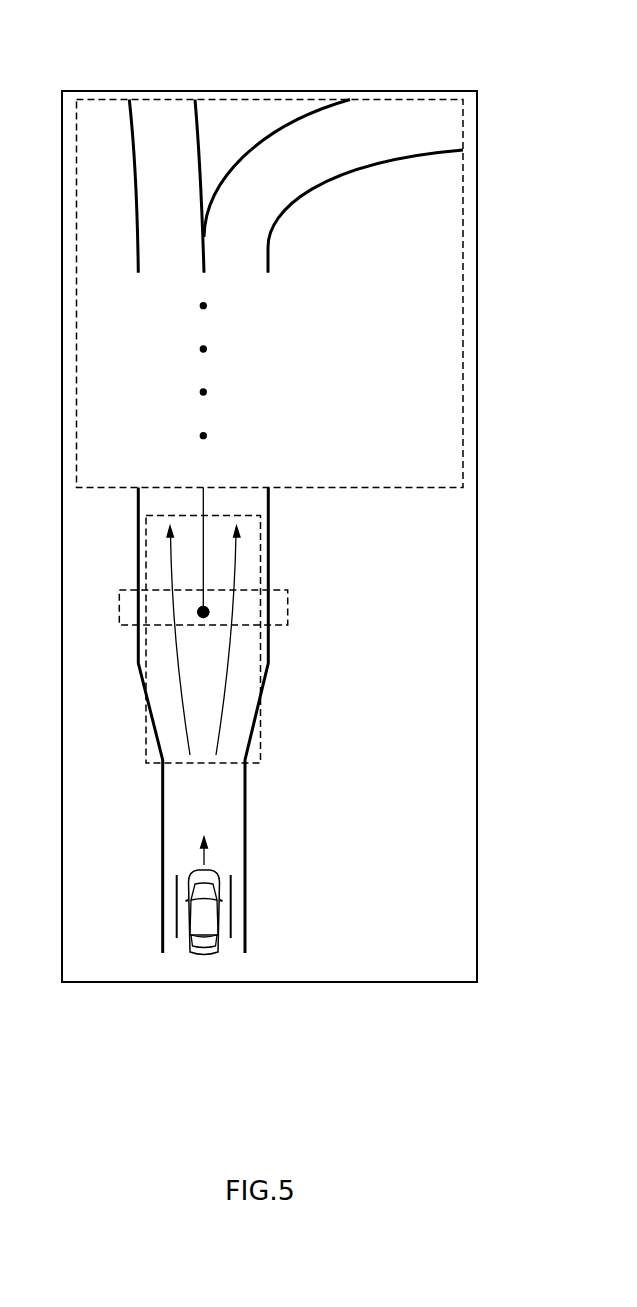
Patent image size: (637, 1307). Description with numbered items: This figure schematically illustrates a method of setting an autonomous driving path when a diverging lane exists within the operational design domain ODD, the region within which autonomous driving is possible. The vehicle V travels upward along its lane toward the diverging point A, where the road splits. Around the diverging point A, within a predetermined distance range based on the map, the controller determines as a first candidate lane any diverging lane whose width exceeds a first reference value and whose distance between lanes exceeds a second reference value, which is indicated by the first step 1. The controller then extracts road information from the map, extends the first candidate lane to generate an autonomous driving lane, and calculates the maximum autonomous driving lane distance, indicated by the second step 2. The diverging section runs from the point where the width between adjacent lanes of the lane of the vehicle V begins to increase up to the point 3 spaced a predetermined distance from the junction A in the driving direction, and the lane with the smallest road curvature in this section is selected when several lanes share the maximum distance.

The first candidate lane determination 1 is at (188, 557).
The autonomous driving lane extension and maximum distance calculation 2 is at (270, 294).
The diverging section end point 3 is at (203, 626).
The diverging point A is at (203, 612).
The vehicle V is at (204, 896).
The operational design domain ODD is at (268, 91).